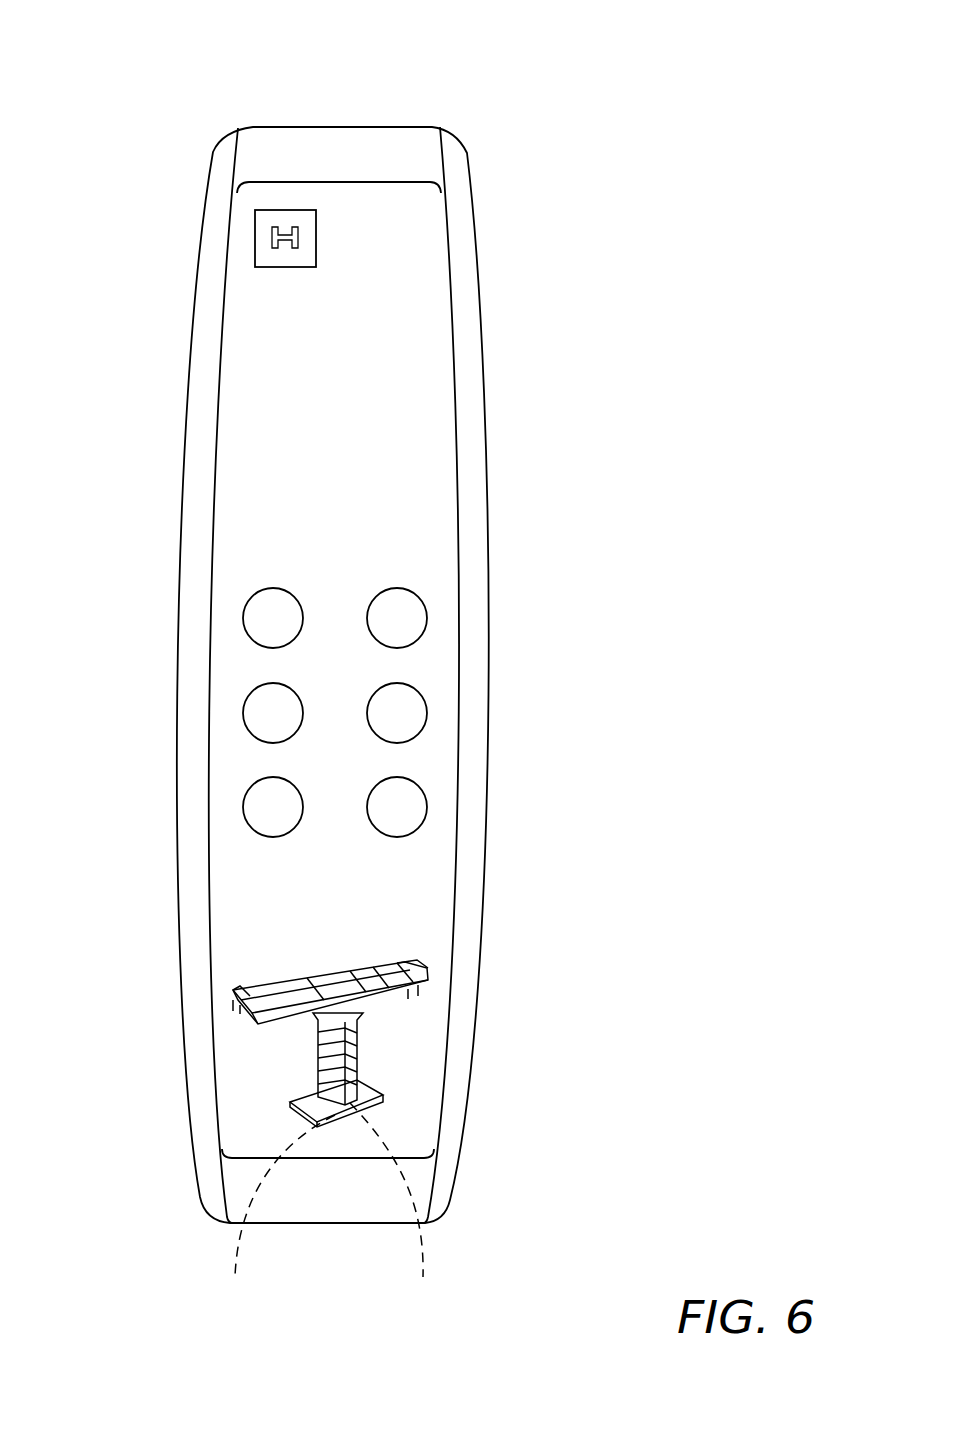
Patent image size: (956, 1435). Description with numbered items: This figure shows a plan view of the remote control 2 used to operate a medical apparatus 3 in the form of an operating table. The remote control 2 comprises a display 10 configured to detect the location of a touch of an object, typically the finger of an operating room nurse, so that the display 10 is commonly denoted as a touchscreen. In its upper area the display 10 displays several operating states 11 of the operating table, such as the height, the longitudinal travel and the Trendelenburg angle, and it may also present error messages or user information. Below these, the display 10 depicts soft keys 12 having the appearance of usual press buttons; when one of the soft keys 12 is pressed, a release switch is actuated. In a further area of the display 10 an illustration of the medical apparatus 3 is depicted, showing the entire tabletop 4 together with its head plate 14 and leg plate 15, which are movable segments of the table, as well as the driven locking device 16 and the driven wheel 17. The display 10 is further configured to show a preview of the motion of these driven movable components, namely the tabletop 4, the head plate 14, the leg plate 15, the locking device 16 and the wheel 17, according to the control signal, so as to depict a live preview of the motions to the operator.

The remote control 2 is at (578, 113).
The medical apparatus 3 is at (328, 958).
The tabletop 4 is at (328, 907).
The display 10 is at (413, 338).
The operating states 11 is at (227, 370).
The soft keys 12 is at (367, 806).
The head plate 14 is at (417, 967).
The leg plate 15 is at (235, 997).
The driven locking device 16 is at (279, 1212).
The driven wheel 17 is at (393, 1206).